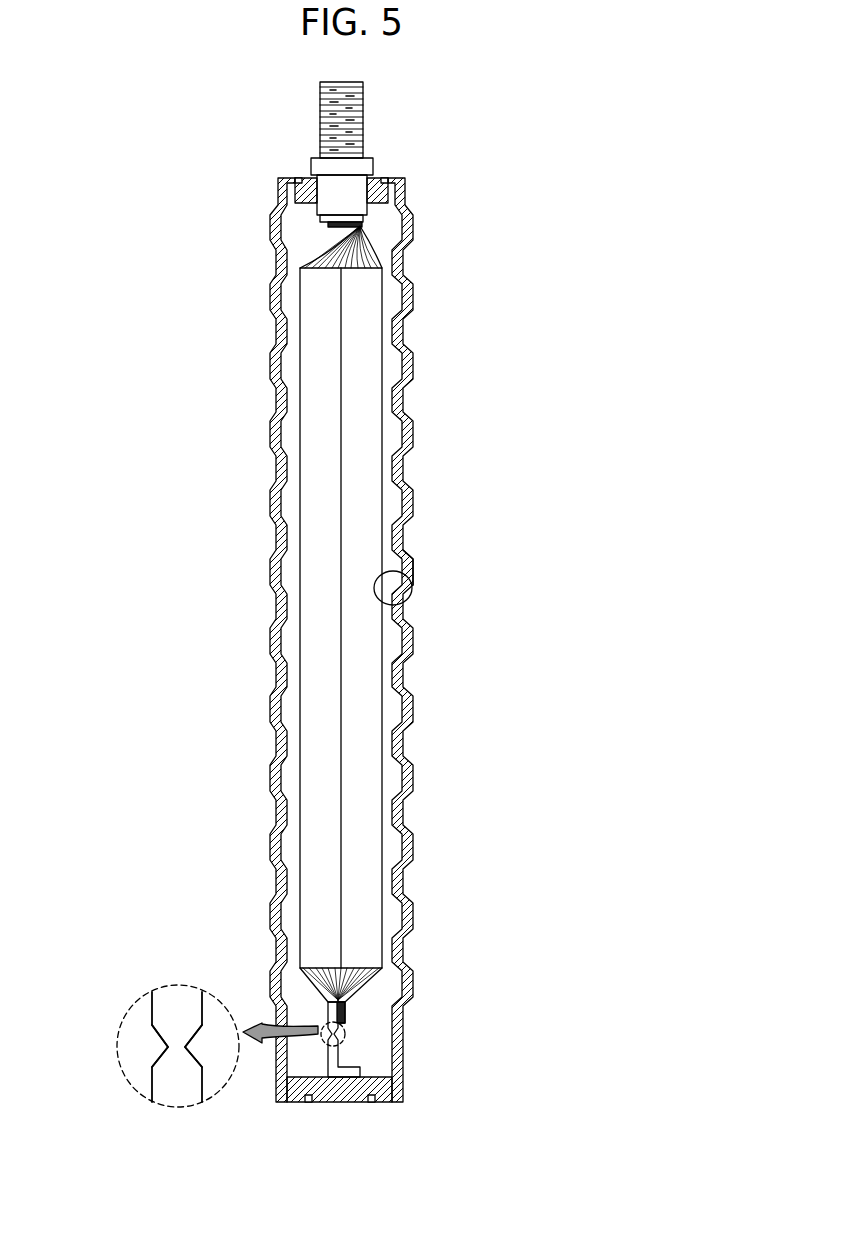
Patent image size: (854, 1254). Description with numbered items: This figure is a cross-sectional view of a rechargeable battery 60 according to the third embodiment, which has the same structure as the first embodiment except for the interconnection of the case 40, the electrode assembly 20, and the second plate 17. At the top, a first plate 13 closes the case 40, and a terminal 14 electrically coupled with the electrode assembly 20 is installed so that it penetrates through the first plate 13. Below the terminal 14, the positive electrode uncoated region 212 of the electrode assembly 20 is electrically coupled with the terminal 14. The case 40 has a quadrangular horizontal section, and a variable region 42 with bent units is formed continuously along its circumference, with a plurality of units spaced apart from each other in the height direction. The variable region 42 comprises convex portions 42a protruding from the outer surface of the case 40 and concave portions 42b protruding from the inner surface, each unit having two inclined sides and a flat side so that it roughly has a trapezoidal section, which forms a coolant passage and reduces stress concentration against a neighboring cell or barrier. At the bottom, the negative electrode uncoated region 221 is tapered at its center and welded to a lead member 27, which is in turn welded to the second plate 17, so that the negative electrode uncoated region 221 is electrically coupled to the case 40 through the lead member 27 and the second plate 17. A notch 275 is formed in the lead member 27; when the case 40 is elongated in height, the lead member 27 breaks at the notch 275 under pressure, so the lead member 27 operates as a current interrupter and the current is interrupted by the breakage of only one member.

The rechargeable battery 60 is at (210, 110).
The terminal 14 is at (364, 100).
The first plate 13 is at (404, 193).
The positive electrode uncoated region 212 is at (336, 250).
The case 40 is at (415, 424).
The variable region 42 is at (452, 569).
The convex portion 42a is at (406, 556).
The concave portion 42b is at (407, 602).
The electrode assembly 20 is at (362, 740).
The negative electrode uncoated region 221 is at (357, 990).
The lead member 27 is at (355, 1062).
The notch 275 is at (167, 1050).
The second plate 17 is at (340, 1103).